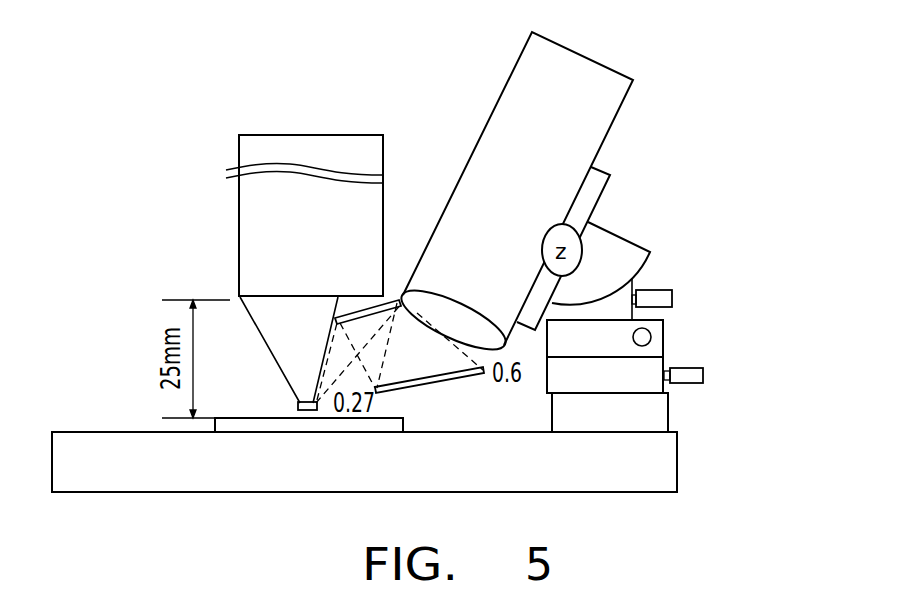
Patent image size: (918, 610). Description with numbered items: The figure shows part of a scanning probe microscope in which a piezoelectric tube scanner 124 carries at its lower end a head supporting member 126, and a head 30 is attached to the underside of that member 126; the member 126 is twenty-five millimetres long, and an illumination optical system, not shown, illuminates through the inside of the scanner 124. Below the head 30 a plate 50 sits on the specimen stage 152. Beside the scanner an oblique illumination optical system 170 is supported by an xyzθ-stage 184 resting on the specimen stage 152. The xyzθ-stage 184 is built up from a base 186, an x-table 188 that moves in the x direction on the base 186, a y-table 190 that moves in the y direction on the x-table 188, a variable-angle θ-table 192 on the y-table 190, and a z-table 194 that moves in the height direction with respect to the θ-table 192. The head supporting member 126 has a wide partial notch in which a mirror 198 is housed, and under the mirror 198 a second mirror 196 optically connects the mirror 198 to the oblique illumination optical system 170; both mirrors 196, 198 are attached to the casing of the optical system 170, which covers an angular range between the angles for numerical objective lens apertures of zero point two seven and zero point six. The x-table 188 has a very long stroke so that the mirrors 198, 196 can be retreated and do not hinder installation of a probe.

The head 30 is at (297, 407).
The sample plate 50 is at (215, 428).
The piezoelectric tube scanner 124 is at (239, 226).
The head supporting member 126 is at (261, 338).
The specimen stage 152 is at (610, 492).
The oblique illumination optical system 170 is at (513, 65).
The xyzθ-stage 184 is at (668, 164).
The base 186 is at (552, 411).
The x-table 188 is at (665, 357).
The y-table 190 is at (664, 322).
The variable-angle θ-table 192 is at (650, 253).
The z-table 194 is at (609, 182).
The mirror 196 is at (404, 390).
The mirror 198 is at (400, 300).